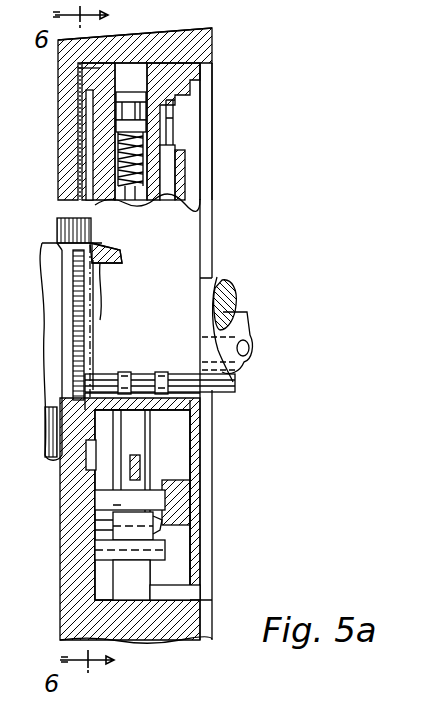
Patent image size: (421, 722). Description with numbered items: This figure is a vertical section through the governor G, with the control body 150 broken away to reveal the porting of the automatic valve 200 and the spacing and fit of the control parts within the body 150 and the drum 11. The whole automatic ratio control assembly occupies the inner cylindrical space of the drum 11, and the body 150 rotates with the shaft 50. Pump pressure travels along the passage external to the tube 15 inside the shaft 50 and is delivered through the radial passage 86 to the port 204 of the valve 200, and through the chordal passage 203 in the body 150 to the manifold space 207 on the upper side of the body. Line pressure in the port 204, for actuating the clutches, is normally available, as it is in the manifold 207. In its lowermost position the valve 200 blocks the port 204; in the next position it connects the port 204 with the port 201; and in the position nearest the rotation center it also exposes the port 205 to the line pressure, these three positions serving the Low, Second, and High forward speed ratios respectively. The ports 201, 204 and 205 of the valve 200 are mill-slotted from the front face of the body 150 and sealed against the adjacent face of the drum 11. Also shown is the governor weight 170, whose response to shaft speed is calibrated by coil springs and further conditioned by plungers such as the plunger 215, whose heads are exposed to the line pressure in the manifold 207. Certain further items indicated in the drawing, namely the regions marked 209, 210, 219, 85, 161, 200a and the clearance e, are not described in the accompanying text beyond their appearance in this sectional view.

The drum 11 is at (188, 46).
The manifold space 207 is at (132, 58).
The governor G is at (208, 75).
The body 210 is at (110, 120).
The plunger 209 is at (146, 100).
The pin 219 is at (150, 136).
The weight 170 is at (184, 164).
The plunger 215 is at (130, 205).
The shaft 50 is at (222, 282).
The tube 15 is at (240, 330).
The screw 85 is at (125, 374).
The radial passage 86 is at (162, 374).
The control body 150 is at (212, 394).
The bore 161 is at (140, 421).
The chordal passage 203 is at (96, 455).
The port 205 is at (168, 498).
The port 204 is at (165, 523).
The port 201 is at (160, 548).
The recess 200a is at (200, 600).
The automatic valve 200 is at (140, 590).
The clearance e is at (118, 522).